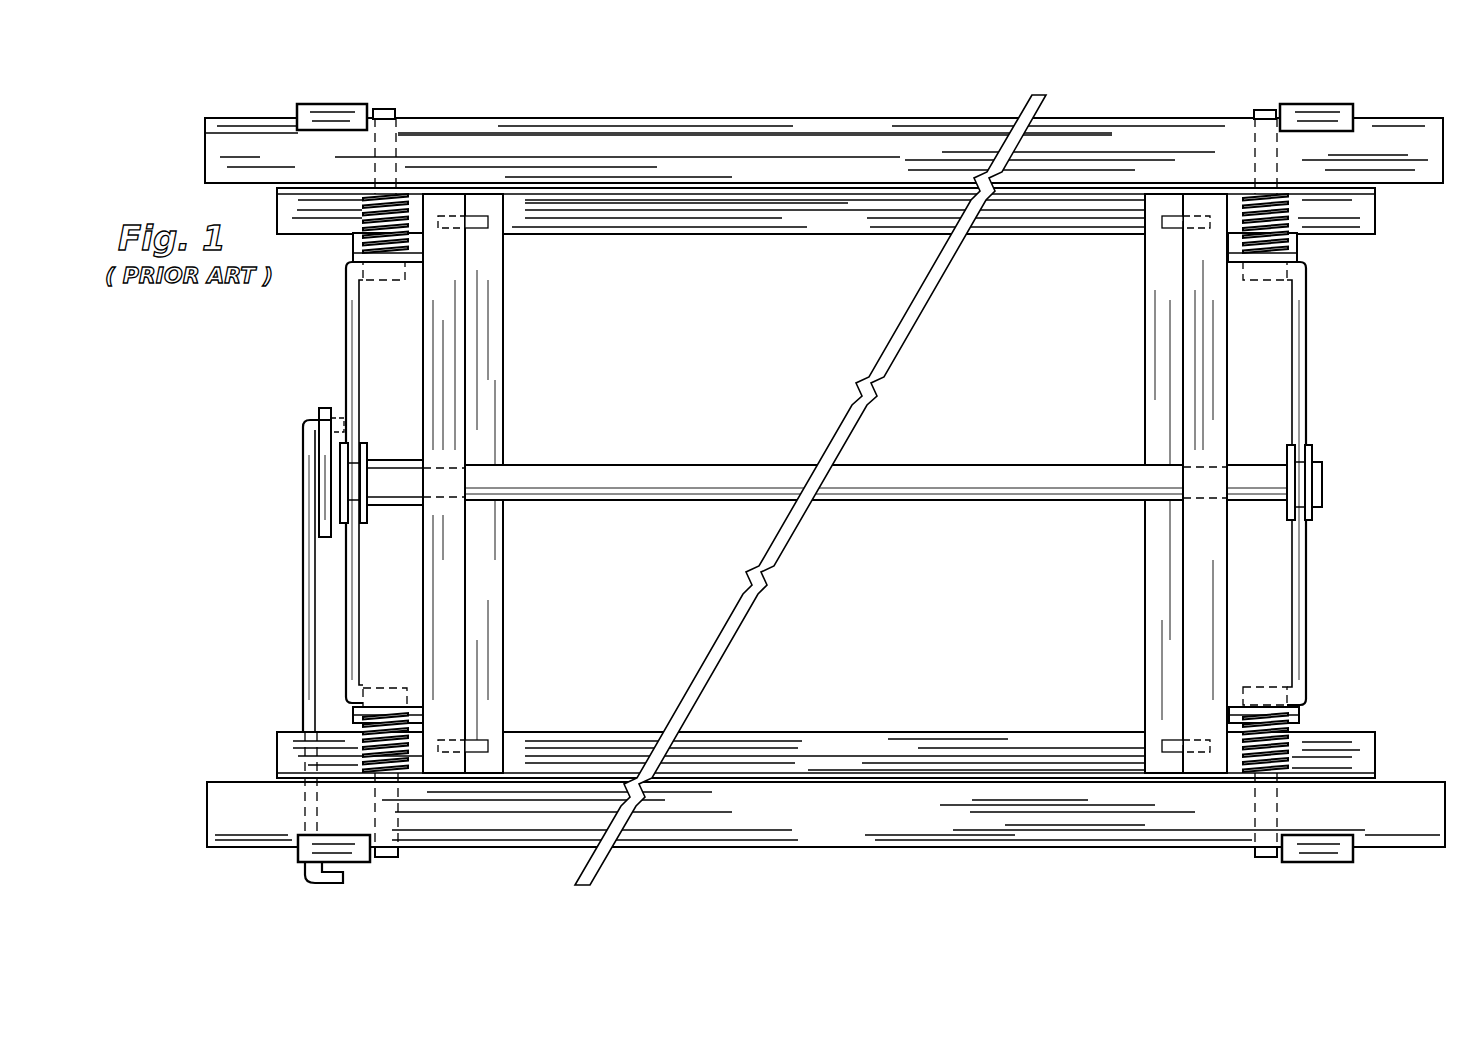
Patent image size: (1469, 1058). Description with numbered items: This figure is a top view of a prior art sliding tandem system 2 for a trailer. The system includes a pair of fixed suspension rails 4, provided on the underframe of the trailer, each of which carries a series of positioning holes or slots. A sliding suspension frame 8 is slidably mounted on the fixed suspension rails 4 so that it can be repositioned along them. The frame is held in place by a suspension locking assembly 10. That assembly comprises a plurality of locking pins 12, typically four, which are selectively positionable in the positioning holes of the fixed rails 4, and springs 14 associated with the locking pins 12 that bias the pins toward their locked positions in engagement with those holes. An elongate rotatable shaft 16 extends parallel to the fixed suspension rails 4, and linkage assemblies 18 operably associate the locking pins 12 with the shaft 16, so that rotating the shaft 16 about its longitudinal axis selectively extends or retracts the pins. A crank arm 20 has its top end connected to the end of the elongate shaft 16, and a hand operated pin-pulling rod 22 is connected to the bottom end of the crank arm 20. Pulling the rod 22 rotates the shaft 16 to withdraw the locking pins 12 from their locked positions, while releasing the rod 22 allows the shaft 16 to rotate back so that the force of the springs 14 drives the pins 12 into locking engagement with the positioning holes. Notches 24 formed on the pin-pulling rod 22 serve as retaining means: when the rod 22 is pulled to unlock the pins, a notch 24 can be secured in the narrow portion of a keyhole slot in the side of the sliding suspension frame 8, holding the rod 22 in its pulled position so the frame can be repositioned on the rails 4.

The sliding tandem system 2 is at (236, 363).
The fixed suspension rails 4 is at (903, 153).
The sliding suspension frame 8 is at (490, 655).
The suspension locking assembly 10 is at (292, 541).
The locking pins 12 is at (393, 110).
The springs 14 is at (365, 233).
The elongate rotatable shaft 16 is at (634, 470).
The linkage assemblies 18 is at (343, 372).
The crank arm 20 is at (318, 413).
The pin-pulling rod 22 is at (305, 580).
The notches 24 is at (300, 657).